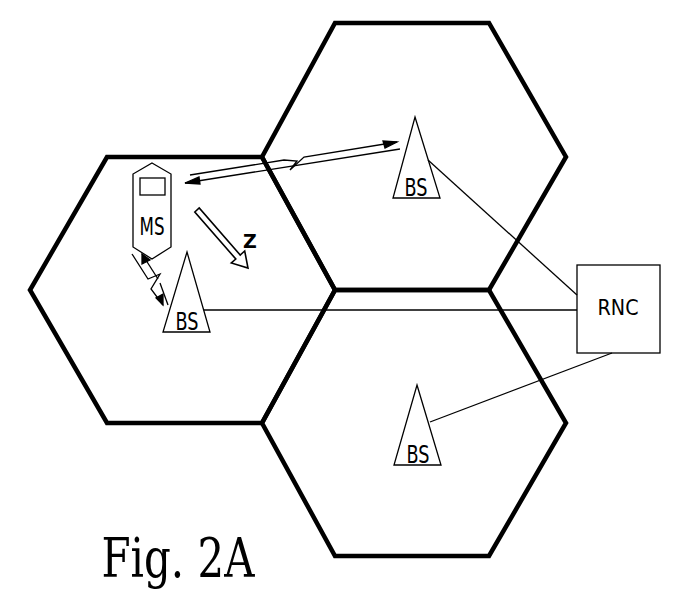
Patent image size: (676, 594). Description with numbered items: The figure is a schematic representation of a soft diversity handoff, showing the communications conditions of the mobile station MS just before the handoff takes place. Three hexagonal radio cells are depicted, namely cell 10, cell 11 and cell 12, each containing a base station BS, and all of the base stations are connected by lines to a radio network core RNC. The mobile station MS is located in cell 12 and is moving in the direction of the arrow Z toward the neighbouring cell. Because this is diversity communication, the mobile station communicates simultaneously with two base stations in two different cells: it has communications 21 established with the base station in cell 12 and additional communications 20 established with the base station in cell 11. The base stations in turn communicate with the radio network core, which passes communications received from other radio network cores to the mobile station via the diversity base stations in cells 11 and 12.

The cell 10 is at (461, 545).
The cell 11 is at (462, 56).
The cell 12 is at (229, 406).
The communications 20 is at (314, 155).
The communications 21 is at (137, 272).